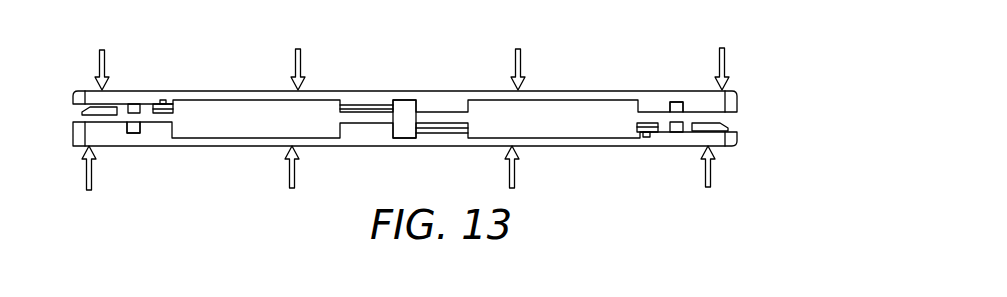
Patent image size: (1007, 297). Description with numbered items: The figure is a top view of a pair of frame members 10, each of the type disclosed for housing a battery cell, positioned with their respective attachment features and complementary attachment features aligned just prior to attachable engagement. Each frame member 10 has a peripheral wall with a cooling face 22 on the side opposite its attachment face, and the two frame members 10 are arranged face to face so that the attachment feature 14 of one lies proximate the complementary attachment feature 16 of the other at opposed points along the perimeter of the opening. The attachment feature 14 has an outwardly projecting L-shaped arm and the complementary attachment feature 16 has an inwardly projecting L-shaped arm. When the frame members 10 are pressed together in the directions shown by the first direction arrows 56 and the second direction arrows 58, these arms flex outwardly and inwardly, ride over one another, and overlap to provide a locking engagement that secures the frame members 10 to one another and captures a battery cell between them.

The frame member 10 is at (405, 113).
The attachment feature 14 is at (163, 97).
The complementary attachment feature 16 is at (654, 96).
The cooling face 22 is at (427, 90).
The first direction arrows 56 is at (303, 68).
The second direction arrows 58 is at (283, 173).